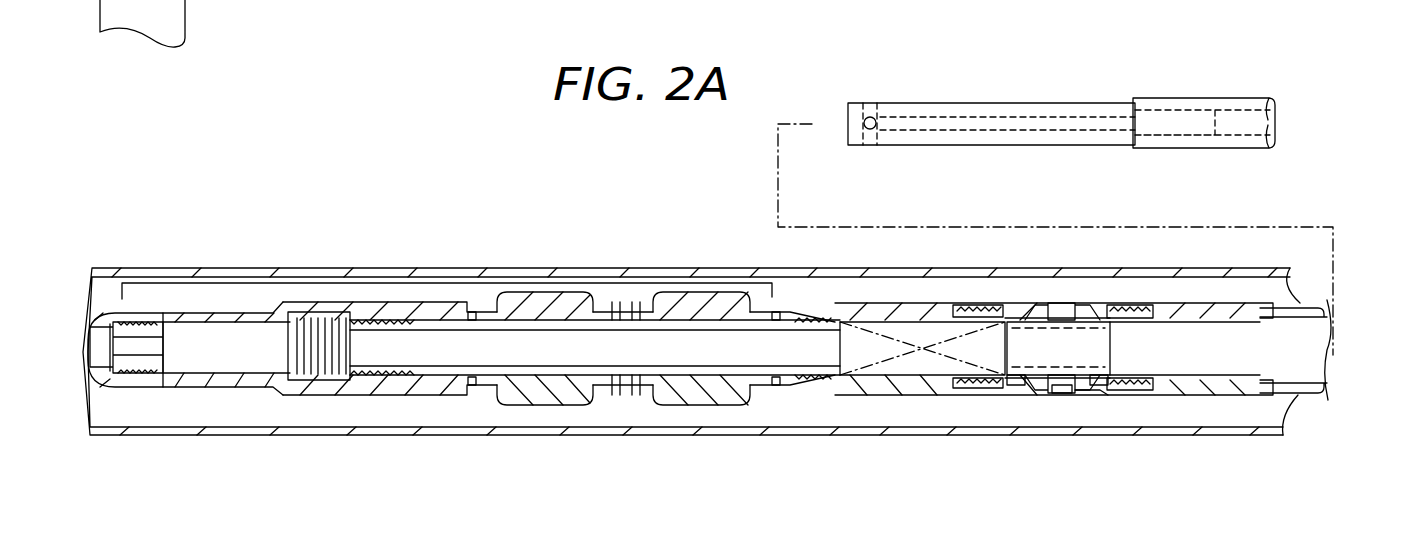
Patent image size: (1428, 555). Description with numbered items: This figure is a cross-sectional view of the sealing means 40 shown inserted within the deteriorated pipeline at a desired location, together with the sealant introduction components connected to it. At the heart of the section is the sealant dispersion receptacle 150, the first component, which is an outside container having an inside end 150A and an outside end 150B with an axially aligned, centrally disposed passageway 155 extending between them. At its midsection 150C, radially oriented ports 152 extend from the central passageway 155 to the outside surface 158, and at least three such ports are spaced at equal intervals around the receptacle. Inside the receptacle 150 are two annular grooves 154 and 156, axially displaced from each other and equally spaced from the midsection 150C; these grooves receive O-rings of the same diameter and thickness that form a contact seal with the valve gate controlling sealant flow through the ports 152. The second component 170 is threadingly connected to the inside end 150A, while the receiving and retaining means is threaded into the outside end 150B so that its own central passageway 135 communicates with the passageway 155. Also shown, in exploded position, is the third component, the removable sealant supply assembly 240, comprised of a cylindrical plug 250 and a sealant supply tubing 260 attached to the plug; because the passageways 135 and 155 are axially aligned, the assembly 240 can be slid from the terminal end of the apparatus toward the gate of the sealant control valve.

The sealing means 40 is at (405, 268).
The central passageway 135 is at (1233, 356).
The sealant dispersion receptacle 150 is at (1077, 317).
The inside end 150A is at (972, 297).
The outside end 150B is at (1147, 297).
The midsection 150C is at (1062, 297).
The radially oriented ports 152 is at (1060, 387).
The annular groove 154 is at (1025, 378).
The central passageway 155 is at (1053, 348).
The annular groove 156 is at (1102, 392).
The outside surface 158 is at (1090, 400).
The second component 170 is at (828, 301).
The removable sealant supply assembly 240 is at (1065, 107).
The cylindrical plug 250 is at (933, 134).
The sealant supply tubing 260 is at (1225, 139).